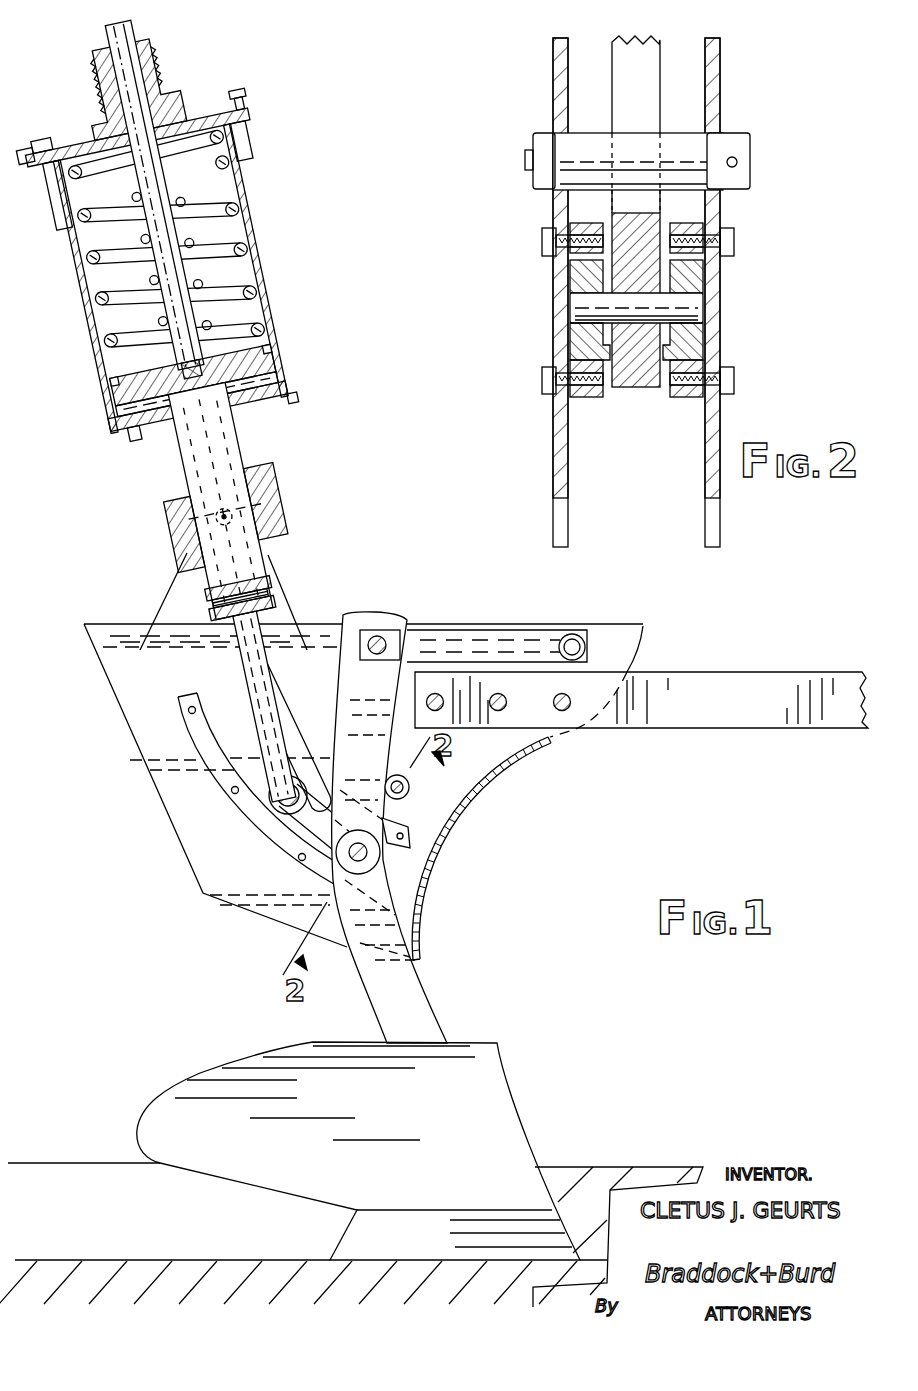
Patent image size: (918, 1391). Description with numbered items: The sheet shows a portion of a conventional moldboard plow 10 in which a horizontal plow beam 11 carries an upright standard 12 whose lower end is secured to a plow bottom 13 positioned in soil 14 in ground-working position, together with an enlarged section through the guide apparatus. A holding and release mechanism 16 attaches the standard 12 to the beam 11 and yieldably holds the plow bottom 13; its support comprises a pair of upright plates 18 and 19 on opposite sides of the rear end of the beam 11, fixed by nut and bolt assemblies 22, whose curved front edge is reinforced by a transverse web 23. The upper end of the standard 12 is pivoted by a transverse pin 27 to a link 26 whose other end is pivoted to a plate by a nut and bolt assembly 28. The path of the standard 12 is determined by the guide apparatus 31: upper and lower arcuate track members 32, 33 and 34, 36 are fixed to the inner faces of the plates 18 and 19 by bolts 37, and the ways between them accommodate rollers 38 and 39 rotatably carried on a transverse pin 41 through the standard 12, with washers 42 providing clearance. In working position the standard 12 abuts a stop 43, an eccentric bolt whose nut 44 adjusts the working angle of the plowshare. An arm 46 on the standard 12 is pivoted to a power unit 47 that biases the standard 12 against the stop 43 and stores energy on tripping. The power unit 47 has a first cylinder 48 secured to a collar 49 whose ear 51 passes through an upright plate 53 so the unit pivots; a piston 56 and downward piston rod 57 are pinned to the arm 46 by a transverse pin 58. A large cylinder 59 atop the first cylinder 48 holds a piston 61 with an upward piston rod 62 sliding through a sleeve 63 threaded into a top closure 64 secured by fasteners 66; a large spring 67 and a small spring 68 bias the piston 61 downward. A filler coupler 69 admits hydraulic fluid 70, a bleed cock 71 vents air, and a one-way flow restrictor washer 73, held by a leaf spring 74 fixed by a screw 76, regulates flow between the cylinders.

In FIG. 1, the moldboard plow 10 is at (92, 608).
In FIG. 1, the plow beam 11 is at (710, 728).
In FIG. 1, the standard 12 is at (402, 978).
In FIG. 2, the standard 12 is at (658, 62).
In FIG. 1, the plow bottom 13 is at (490, 1078).
In FIG. 1, the soil 14 is at (578, 1170).
In FIG. 1, the holding and release mechanism 16 is at (195, 798).
In FIG. 1, the upright plate 18 is at (620, 642).
In FIG. 2, the upright plate 18 is at (714, 418).
In FIG. 2, the upright plate 19 is at (553, 480).
In FIG. 1, the nut and bolt assemblies 22 is at (563, 702).
In FIG. 1, the transverse web 23 is at (484, 792).
In FIG. 1, the link 26 is at (474, 636).
In FIG. 1, the transverse pin 27 is at (380, 636).
In FIG. 1, the nut and bolt assembly 28 is at (574, 634).
In FIG. 1, the guide apparatus 31 is at (300, 874).
In FIG. 2, the guide apparatus 31 is at (622, 404).
In FIG. 2, the upper arcuate track member 32 is at (575, 223).
In FIG. 2, the lower arcuate track member 33 is at (578, 396).
In FIG. 1, the upper arcuate track member 34 is at (405, 824).
In FIG. 2, the upper arcuate track member 34 is at (690, 223).
In FIG. 1, the lower arcuate track member 36 is at (252, 818).
In FIG. 2, the lower arcuate track member 36 is at (683, 400).
In FIG. 1, the bolts 37 is at (188, 710).
In FIG. 2, the bolts 37 is at (542, 242).
In FIG. 1, the roller 38 is at (370, 862).
In FIG. 2, the roller 38 is at (580, 278).
In FIG. 2, the roller 39 is at (700, 280).
In FIG. 1, the transverse pin 41 is at (374, 854).
In FIG. 2, the transverse pin 41 is at (590, 306).
In FIG. 2, the washers 42 is at (590, 337).
In FIG. 1, the stop 43 is at (410, 788).
In FIG. 2, the stop 43 is at (590, 143).
In FIG. 2, the nut 44 is at (540, 138).
In FIG. 1, the arm 46 is at (300, 826).
In FIG. 1, the power unit 47 is at (181, 313).
In FIG. 1, the first cylinder 48 is at (268, 581).
In FIG. 1, the collar 49 is at (277, 491).
In FIG. 1, the ear 51 is at (252, 508).
In FIG. 1, the upright plate 53 is at (290, 606).
In FIG. 1, the piston 56 is at (216, 587).
In FIG. 1, the piston rod 57 is at (268, 670).
In FIG. 1, the transverse pin 58 is at (292, 788).
In FIG. 1, the large cylinder 59 is at (98, 360).
In FIG. 1, the piston 61 is at (262, 352).
In FIG. 1, the piston rod 62 is at (173, 246).
In FIG. 1, the sleeve 63 is at (143, 70).
In FIG. 1, the top closure 64 is at (200, 112).
In FIG. 1, the fasteners 66 is at (242, 92).
In FIG. 1, the large spring 67 is at (256, 248).
In FIG. 1, the small spring 68 is at (183, 198).
In FIG. 1, the filler coupler 69 is at (125, 441).
In FIG. 1, the hydraulic fluid 70 is at (208, 465).
In FIG. 1, the bleed cock 71 is at (293, 406).
In FIG. 1, the one-way flow restrictor washer 73 is at (125, 414).
In FIG. 1, the leaf spring 74 is at (252, 402).
In FIG. 1, the screw 76 is at (275, 372).